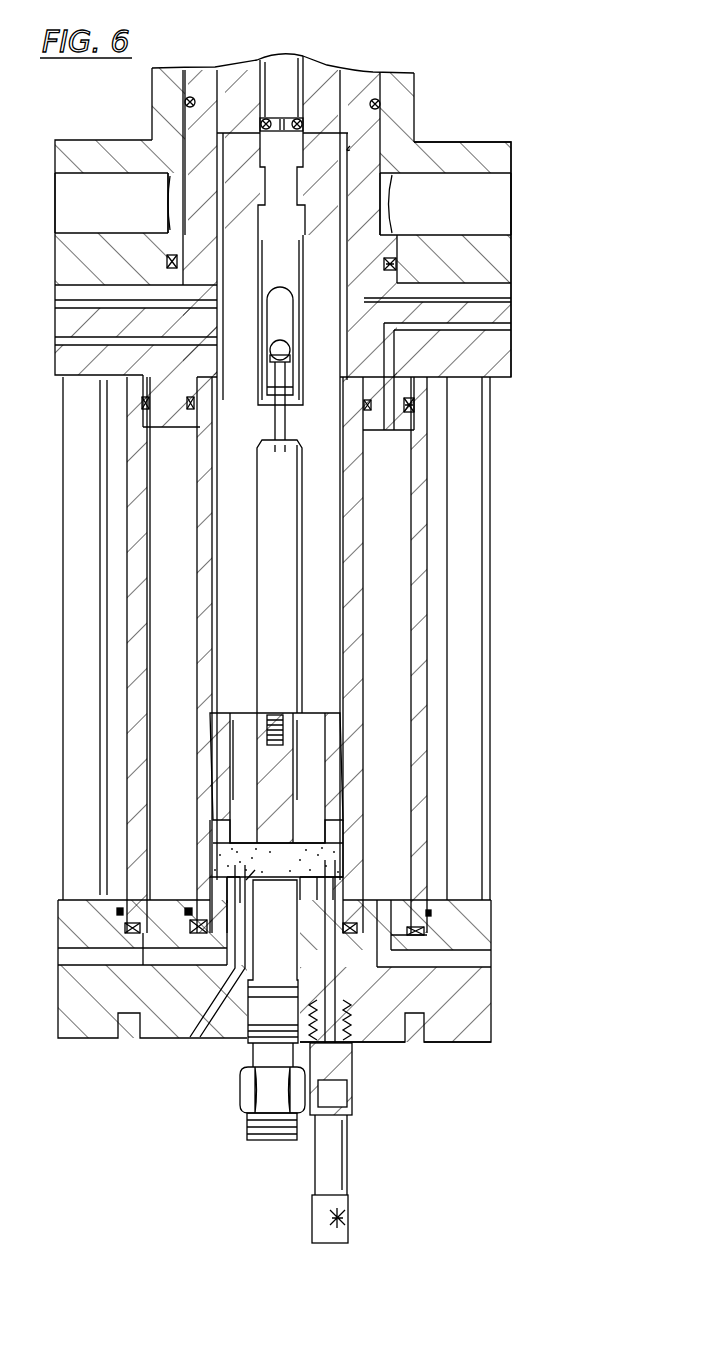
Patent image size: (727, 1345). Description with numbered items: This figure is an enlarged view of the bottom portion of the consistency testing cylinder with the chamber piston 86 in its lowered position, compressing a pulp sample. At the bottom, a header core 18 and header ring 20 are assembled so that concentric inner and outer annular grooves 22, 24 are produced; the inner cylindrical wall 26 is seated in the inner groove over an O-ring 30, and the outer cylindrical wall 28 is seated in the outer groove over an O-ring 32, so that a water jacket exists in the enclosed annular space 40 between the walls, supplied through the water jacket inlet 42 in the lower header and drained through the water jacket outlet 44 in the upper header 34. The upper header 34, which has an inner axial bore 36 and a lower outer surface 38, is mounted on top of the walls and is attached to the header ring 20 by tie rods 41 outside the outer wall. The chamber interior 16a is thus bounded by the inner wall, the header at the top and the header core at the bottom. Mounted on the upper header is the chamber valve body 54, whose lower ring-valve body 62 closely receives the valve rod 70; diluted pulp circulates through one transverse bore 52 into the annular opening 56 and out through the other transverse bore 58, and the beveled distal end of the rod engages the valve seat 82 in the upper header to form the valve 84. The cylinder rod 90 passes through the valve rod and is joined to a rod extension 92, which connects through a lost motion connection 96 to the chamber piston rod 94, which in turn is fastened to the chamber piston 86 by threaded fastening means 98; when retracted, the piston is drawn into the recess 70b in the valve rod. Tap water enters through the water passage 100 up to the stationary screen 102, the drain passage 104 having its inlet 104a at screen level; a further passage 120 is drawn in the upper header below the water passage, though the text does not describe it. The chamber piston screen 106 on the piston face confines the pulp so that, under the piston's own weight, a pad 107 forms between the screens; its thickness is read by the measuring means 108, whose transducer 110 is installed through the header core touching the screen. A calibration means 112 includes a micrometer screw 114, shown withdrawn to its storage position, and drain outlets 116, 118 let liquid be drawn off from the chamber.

The consistency testing chamber portion 16a is at (254, 596).
The header core 18 is at (418, 1040).
The header ring 20 is at (493, 1017).
The inner annular groove 22 is at (192, 930).
The outer annular groove 24 is at (425, 948).
The inner cylindrical wall 26 is at (345, 543).
The outer cylindrical wall 28 is at (428, 557).
The O-ring 30 is at (352, 933).
The O-ring 32 is at (420, 933).
The upper header 34 is at (510, 367).
The inner axial bore 36 is at (202, 424).
The lower outer surface 38 is at (412, 410).
The enclosed annular space 40 is at (398, 614).
The tie rods 41 is at (63, 697).
The water jacket inlet 42 is at (480, 963).
The water jacket outlet 44 is at (507, 331).
The transverse bore 52 is at (66, 203).
The chamber valve body 54 is at (501, 139).
The annular opening 56 is at (390, 188).
The transverse bore 58 is at (505, 193).
The lower ring-valve body 62 is at (407, 73).
The valve rod 70 is at (372, 72).
The recess 70b is at (350, 146).
The valve seat 82 is at (357, 240).
The valve 84 is at (186, 241).
The chamber piston 86 is at (334, 778).
The cylinder rod 90 is at (292, 65).
The rod extension 92 is at (304, 287).
The lost motion connection 96 is at (287, 353).
The chamber piston rod 94 is at (302, 553).
The threaded fastening means 98 is at (290, 728).
The water passage 100 is at (58, 304).
The stationary screen 102 is at (320, 870).
The drain passage 104 is at (191, 1040).
The inlet 104a is at (279, 864).
The chamber piston screen 106 is at (315, 848).
The pad 107 is at (213, 858).
The measuring means 108 is at (239, 1119).
The transducer 110 is at (286, 1021).
The calibration means 112 is at (352, 1141).
The micrometer screw 114 is at (353, 1066).
The drain outlet 116 is at (157, 958).
The drain outlet 118 is at (62, 960).
The fluid channel 120 is at (60, 341).